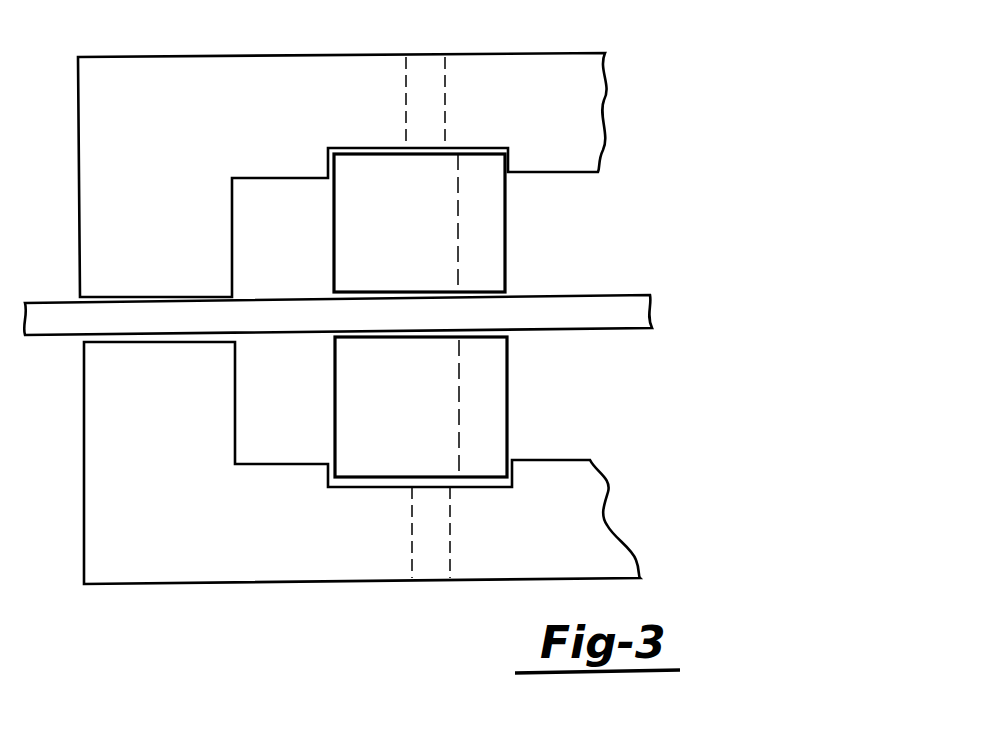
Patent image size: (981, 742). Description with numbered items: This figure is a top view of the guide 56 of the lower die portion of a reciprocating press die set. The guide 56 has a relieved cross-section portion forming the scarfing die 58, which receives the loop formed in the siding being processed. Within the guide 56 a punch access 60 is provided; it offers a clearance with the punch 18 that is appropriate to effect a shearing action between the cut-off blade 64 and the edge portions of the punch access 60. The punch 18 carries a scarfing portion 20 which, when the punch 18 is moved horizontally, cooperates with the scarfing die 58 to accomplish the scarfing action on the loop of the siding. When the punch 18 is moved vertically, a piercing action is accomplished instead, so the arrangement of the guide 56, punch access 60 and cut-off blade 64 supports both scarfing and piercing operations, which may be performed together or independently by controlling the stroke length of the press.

The punch 18 is at (371, 239).
The scarfing portion 20 is at (460, 398).
The guide 56 is at (188, 528).
The scarfing die 58 is at (428, 543).
The punch access 60 is at (520, 217).
The cut-off blade 64 is at (557, 313).